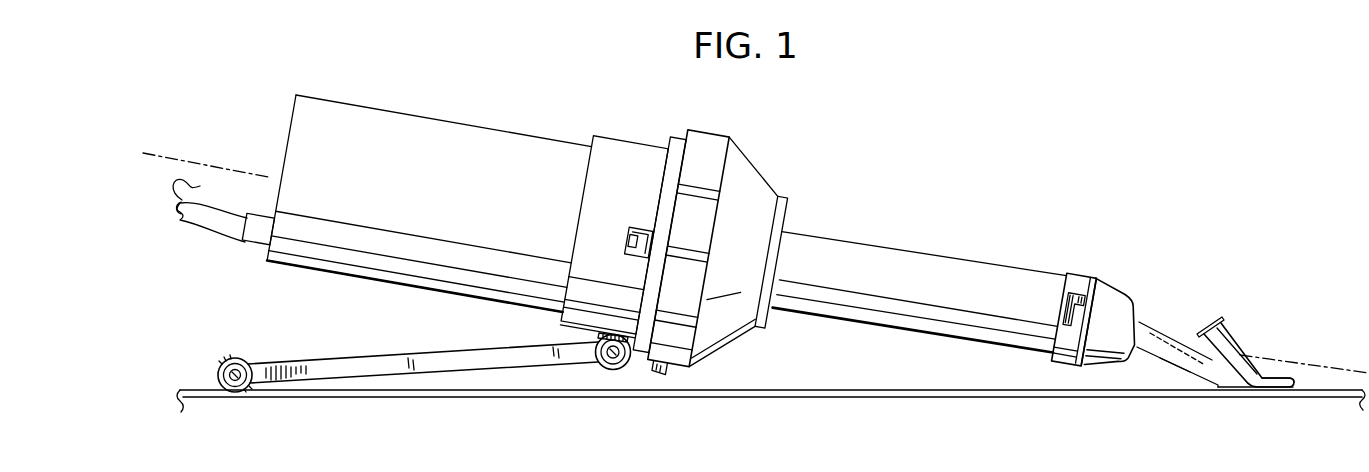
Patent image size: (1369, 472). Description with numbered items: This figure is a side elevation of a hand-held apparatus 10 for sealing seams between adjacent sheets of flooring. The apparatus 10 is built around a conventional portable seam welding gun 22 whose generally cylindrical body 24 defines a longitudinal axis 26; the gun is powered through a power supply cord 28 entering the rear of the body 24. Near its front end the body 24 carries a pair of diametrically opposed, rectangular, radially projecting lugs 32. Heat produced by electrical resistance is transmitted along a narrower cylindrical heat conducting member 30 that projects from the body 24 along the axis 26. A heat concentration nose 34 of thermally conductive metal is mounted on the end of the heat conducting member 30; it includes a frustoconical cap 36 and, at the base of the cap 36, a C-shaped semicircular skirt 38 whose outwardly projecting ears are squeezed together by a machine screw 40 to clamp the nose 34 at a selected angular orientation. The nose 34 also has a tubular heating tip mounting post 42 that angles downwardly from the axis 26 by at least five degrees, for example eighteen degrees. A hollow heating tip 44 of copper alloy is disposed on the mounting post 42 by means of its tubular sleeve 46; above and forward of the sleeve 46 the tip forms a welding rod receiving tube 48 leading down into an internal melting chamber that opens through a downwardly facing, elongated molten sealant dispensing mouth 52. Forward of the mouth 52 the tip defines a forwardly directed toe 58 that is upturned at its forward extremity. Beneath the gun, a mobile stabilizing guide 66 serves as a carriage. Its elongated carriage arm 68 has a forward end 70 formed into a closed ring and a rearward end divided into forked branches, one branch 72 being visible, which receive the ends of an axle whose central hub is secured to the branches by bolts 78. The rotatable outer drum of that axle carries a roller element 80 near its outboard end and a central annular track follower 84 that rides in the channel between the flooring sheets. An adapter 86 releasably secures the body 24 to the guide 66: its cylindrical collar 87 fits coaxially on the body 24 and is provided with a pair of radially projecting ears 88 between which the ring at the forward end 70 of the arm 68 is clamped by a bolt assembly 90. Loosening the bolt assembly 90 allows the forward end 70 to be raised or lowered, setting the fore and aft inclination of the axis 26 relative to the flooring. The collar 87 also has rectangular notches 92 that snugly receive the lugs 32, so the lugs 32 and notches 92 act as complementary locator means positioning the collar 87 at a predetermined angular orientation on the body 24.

The apparatus 10 is at (729, 241).
The seam welding gun 22 is at (530, 133).
The body 24 is at (373, 122).
The longitudinal axis 26 is at (173, 157).
The power supply cord 28 is at (208, 220).
The heat conducting member 30 is at (932, 270).
The lugs 32 is at (640, 245).
The heat concentration nose 34 is at (1085, 286).
The cap 36 is at (1110, 280).
The skirt 38 is at (1080, 283).
The machine screw 40 is at (1066, 293).
The heating tip mounting post 42 is at (1161, 340).
The hollow heating tip 44 is at (1259, 341).
The tubular sleeve 46 is at (1167, 363).
The welding rod receiving tube 48 is at (1216, 330).
The molten sealant dispensing mouth 52 is at (1250, 388).
The toe 58 is at (1287, 378).
The stabilizing guide 66 is at (417, 366).
The carriage arm 68 is at (495, 360).
The forward end 70 is at (613, 367).
The forked branch 72 is at (282, 375).
The bolts 78 is at (223, 373).
The roller element 80 is at (218, 353).
The track follower 84 is at (238, 352).
The adapter 86 is at (627, 168).
The collar 87 is at (598, 173).
The ears 88 is at (600, 340).
The bolt assembly 90 is at (617, 354).
The notches 92 is at (630, 245).